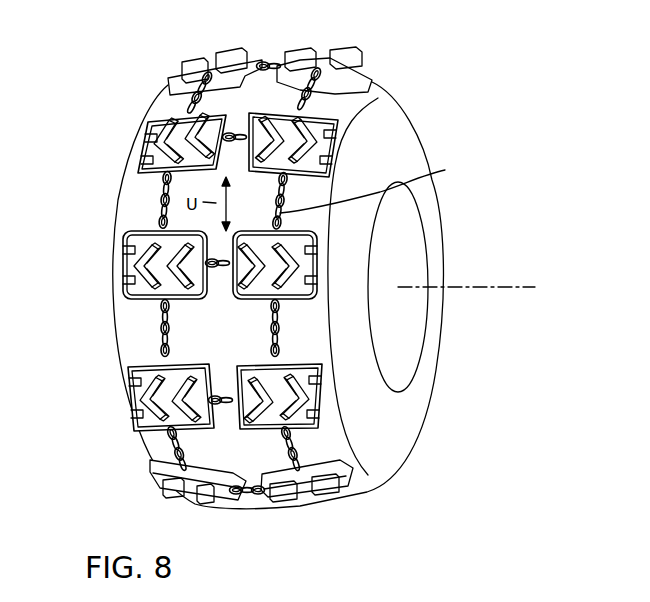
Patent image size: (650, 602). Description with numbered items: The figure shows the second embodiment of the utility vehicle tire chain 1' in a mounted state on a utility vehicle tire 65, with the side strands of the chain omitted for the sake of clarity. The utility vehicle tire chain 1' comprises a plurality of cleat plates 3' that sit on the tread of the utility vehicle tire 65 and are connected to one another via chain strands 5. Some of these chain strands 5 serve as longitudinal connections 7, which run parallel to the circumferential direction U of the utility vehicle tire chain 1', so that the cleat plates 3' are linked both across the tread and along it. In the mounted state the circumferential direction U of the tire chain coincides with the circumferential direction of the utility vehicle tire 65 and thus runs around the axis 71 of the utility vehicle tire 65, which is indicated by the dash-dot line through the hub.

The utility vehicle tire chain 1' is at (285, 258).
The cleat plate 3' is at (285, 275).
The chain strand 5 is at (333, 172).
The longitudinal connection 7 is at (303, 192).
The axis 71 is at (512, 285).
The utility vehicle tire 65 is at (443, 443).